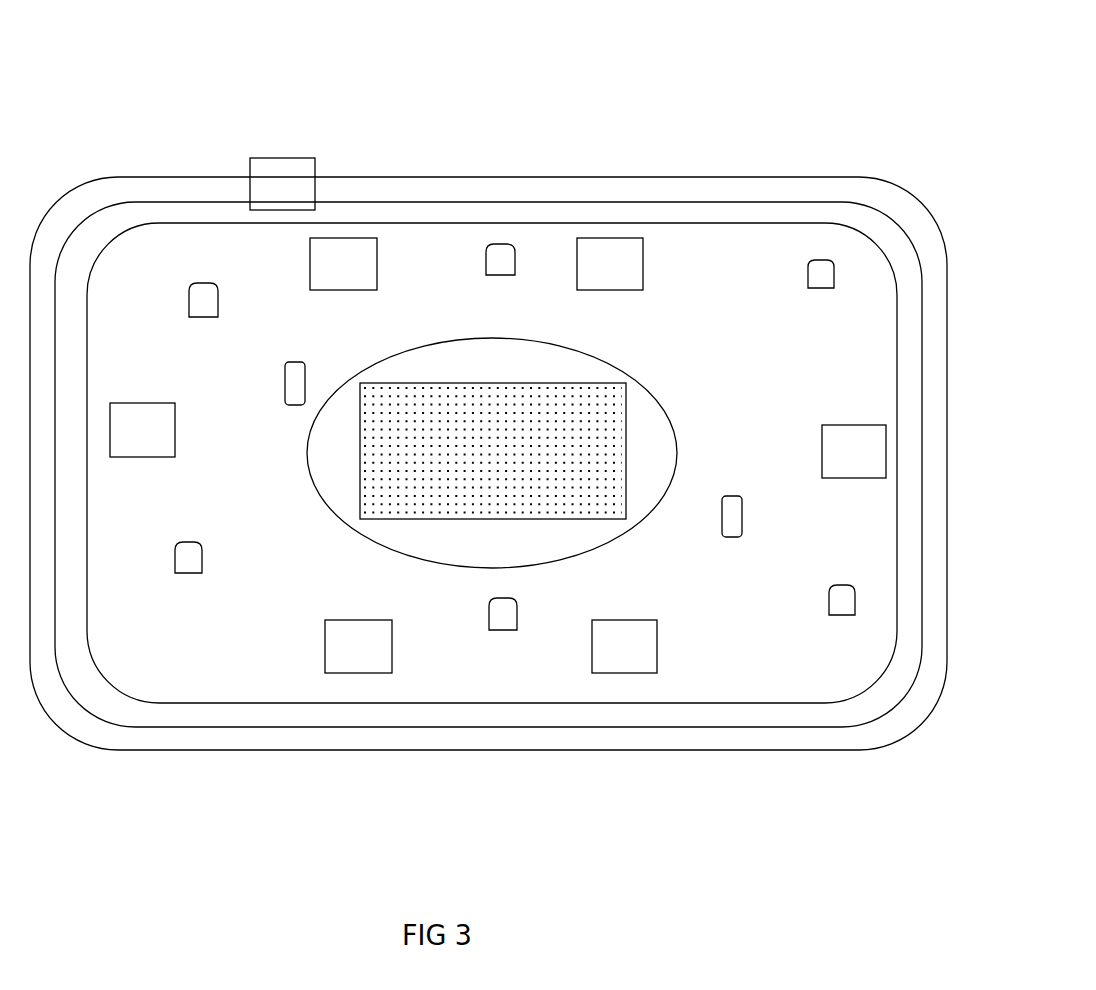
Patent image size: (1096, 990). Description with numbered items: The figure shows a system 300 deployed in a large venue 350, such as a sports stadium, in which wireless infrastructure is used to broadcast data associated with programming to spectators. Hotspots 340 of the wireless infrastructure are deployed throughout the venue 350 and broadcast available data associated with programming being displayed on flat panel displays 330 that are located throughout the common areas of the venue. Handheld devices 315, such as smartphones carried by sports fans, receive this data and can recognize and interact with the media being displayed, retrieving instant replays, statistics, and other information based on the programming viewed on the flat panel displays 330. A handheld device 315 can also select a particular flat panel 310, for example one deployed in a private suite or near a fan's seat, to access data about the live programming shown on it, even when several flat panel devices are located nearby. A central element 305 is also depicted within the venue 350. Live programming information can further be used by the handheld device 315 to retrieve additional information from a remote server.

The system 300 is at (688, 113).
The display / central component 305 is at (493, 451).
The flat panel 310 is at (282, 184).
The handheld device 315 is at (298, 402).
The flat panel display 330 is at (498, 455).
The hotspot 340 is at (491, 271).
The large venue 350 is at (190, 316).